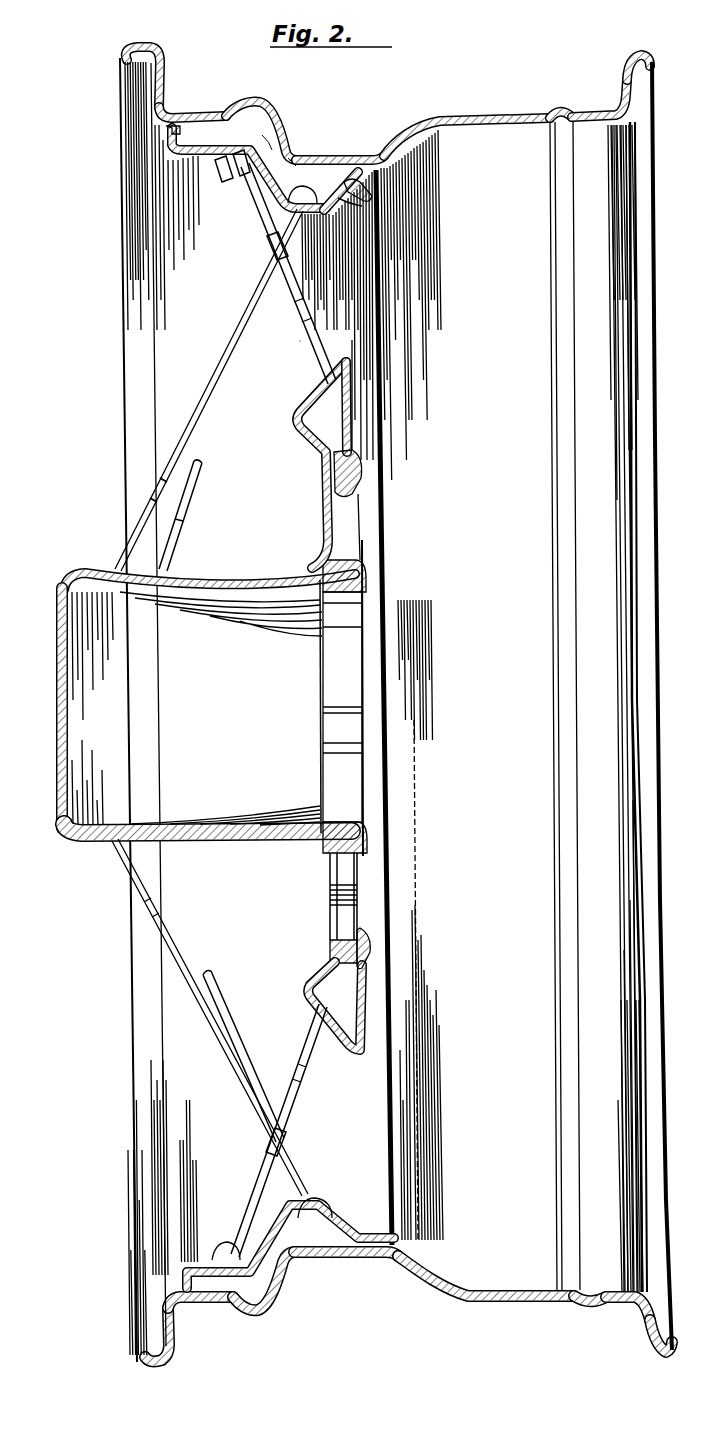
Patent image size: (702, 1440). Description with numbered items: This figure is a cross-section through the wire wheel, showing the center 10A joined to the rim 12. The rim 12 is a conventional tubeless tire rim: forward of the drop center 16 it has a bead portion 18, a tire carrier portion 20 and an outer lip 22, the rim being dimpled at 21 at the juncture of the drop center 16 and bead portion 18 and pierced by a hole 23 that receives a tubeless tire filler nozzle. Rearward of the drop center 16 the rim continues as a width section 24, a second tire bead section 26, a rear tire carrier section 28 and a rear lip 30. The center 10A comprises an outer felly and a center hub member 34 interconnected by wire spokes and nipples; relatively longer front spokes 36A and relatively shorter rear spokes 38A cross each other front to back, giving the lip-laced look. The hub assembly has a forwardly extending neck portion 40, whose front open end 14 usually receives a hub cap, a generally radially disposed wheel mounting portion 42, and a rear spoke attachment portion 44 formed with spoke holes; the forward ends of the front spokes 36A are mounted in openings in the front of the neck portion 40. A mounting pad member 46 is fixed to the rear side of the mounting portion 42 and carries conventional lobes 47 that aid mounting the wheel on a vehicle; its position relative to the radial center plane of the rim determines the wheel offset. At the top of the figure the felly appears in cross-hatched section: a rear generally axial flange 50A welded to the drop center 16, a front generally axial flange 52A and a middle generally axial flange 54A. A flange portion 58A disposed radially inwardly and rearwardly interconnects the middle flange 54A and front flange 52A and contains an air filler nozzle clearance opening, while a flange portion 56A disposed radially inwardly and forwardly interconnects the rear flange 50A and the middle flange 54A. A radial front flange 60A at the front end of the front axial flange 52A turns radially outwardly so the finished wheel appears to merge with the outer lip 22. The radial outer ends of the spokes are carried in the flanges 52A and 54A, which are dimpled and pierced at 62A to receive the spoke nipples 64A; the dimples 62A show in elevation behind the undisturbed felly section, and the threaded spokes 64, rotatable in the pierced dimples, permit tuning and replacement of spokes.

The center 10A is at (80, 92).
The rim 12 is at (148, 47).
The hub 14 is at (80, 568).
The drop center 16 is at (356, 152).
The bead portion 18 is at (258, 100).
The tire carrier portion 20 is at (205, 112).
The dimple 21 is at (285, 150).
The outer lip 22 is at (128, 52).
The hole 23 is at (292, 160).
The width section 24 is at (493, 118).
The second tire bead section 26 is at (558, 107).
The rear tire carrier section 28 is at (580, 111).
The rear lip 30 is at (633, 56).
The center hub member 34 is at (368, 485).
The front spokes 36A is at (200, 470).
The rear spokes 38A is at (292, 320).
The neck portion 40 is at (254, 568).
The wheel mounting portion 42 is at (326, 502).
The rear spoke attachment portion 44 is at (305, 408).
The mounting pad member 46 is at (328, 906).
The lobes 47 is at (352, 722).
The rear generally axial flange 50A is at (372, 162).
The front generally axial flange 52A is at (186, 148).
The middle generally axial flange 54A is at (322, 224).
The flange portion 56A is at (362, 184).
The flange portion 58A is at (250, 208).
The radial front flange 60A is at (165, 130).
The dimples 62A is at (317, 1198).
The spokes 64 is at (143, 523).
The spoke nipples 64A is at (212, 165).